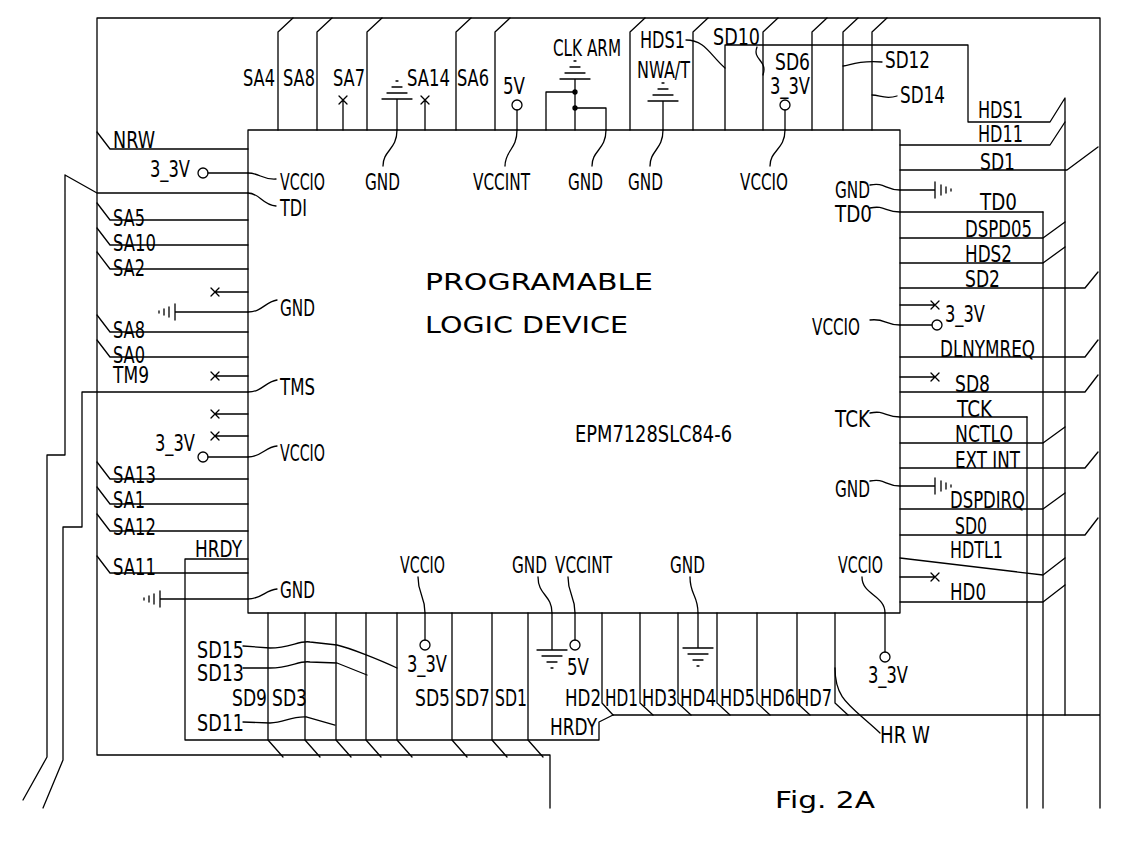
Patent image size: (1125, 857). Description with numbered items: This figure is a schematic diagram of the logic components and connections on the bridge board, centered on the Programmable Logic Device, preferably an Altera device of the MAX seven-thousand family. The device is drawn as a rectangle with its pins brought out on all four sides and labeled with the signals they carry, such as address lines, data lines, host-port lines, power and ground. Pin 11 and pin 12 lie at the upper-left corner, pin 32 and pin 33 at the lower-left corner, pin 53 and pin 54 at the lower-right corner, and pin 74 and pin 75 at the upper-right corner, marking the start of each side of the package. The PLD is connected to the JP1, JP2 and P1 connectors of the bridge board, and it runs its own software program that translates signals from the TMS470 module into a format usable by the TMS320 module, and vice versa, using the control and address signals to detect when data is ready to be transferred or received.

The pin 11 of programmable logic device 11 is at (274, 74).
The pin 12 of programmable logic device 12 is at (172, 146).
The pin 32 of programmable logic device 32 is at (196, 595).
The pin 33 of programmable logic device 33 is at (264, 685).
The pin 53 of programmable logic device 53 is at (876, 637).
The pin 54 of programmable logic device 54 is at (982, 598).
The pin 74 of programmable logic device 74 is at (982, 137).
The pin 75 of programmable logic device 75 is at (869, 74).